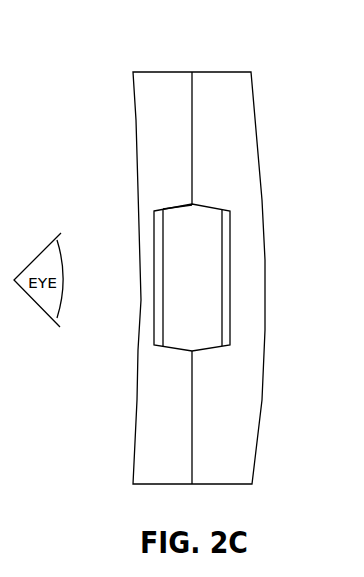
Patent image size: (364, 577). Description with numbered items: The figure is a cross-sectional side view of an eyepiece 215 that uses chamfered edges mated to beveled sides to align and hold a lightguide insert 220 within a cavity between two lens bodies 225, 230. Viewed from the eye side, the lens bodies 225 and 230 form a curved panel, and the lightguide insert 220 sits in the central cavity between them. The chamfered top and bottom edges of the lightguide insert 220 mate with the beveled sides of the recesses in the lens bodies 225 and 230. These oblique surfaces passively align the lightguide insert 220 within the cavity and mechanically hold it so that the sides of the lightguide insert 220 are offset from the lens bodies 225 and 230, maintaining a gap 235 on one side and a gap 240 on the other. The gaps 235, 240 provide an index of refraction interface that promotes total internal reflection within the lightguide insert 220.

The eyepiece 215 is at (107, 79).
The lightguide insert 220 is at (203, 289).
The lens body 225 is at (174, 158).
The lens body 230 is at (236, 158).
The gap 235 is at (160, 322).
The gap 240 is at (225, 246).